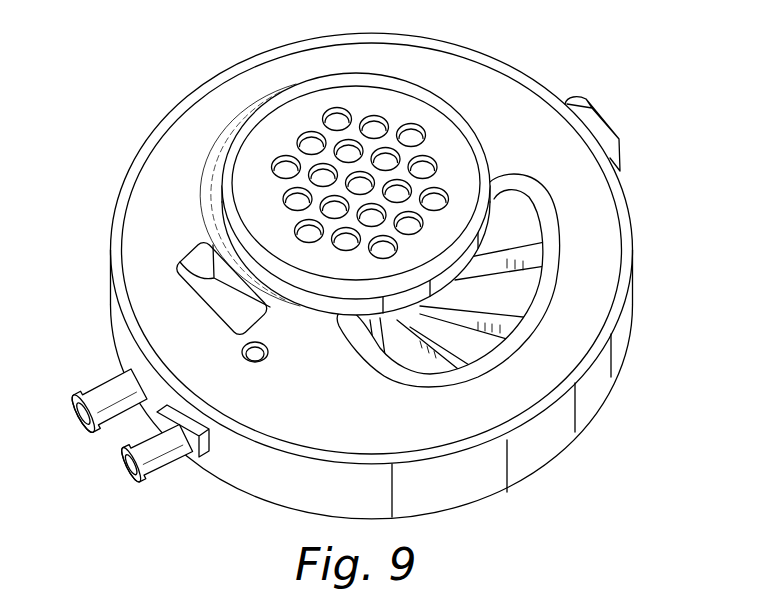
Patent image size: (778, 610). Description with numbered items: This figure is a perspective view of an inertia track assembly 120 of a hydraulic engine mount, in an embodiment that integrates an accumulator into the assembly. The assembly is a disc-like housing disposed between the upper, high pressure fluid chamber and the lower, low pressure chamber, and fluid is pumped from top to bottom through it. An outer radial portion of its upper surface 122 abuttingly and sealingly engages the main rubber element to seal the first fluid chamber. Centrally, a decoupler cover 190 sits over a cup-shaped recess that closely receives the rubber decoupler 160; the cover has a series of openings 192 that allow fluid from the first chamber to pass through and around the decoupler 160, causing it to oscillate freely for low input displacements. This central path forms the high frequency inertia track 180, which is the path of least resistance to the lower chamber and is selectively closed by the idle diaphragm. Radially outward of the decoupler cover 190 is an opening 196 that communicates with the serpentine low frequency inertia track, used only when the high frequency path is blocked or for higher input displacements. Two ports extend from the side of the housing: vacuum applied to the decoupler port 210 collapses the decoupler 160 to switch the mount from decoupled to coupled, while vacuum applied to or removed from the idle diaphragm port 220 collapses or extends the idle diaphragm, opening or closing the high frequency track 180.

The inertia track assembly 120 is at (547, 435).
The outer radial portion of upper surface 122 is at (178, 148).
The decoupler 160 is at (333, 118).
The high frequency inertia track 180 is at (497, 295).
The decoupler cover 190 is at (288, 112).
The openings 192 is at (428, 162).
The opening 196 is at (182, 267).
The decoupler port 210 is at (105, 385).
The idle diaphragm port 220 is at (163, 460).